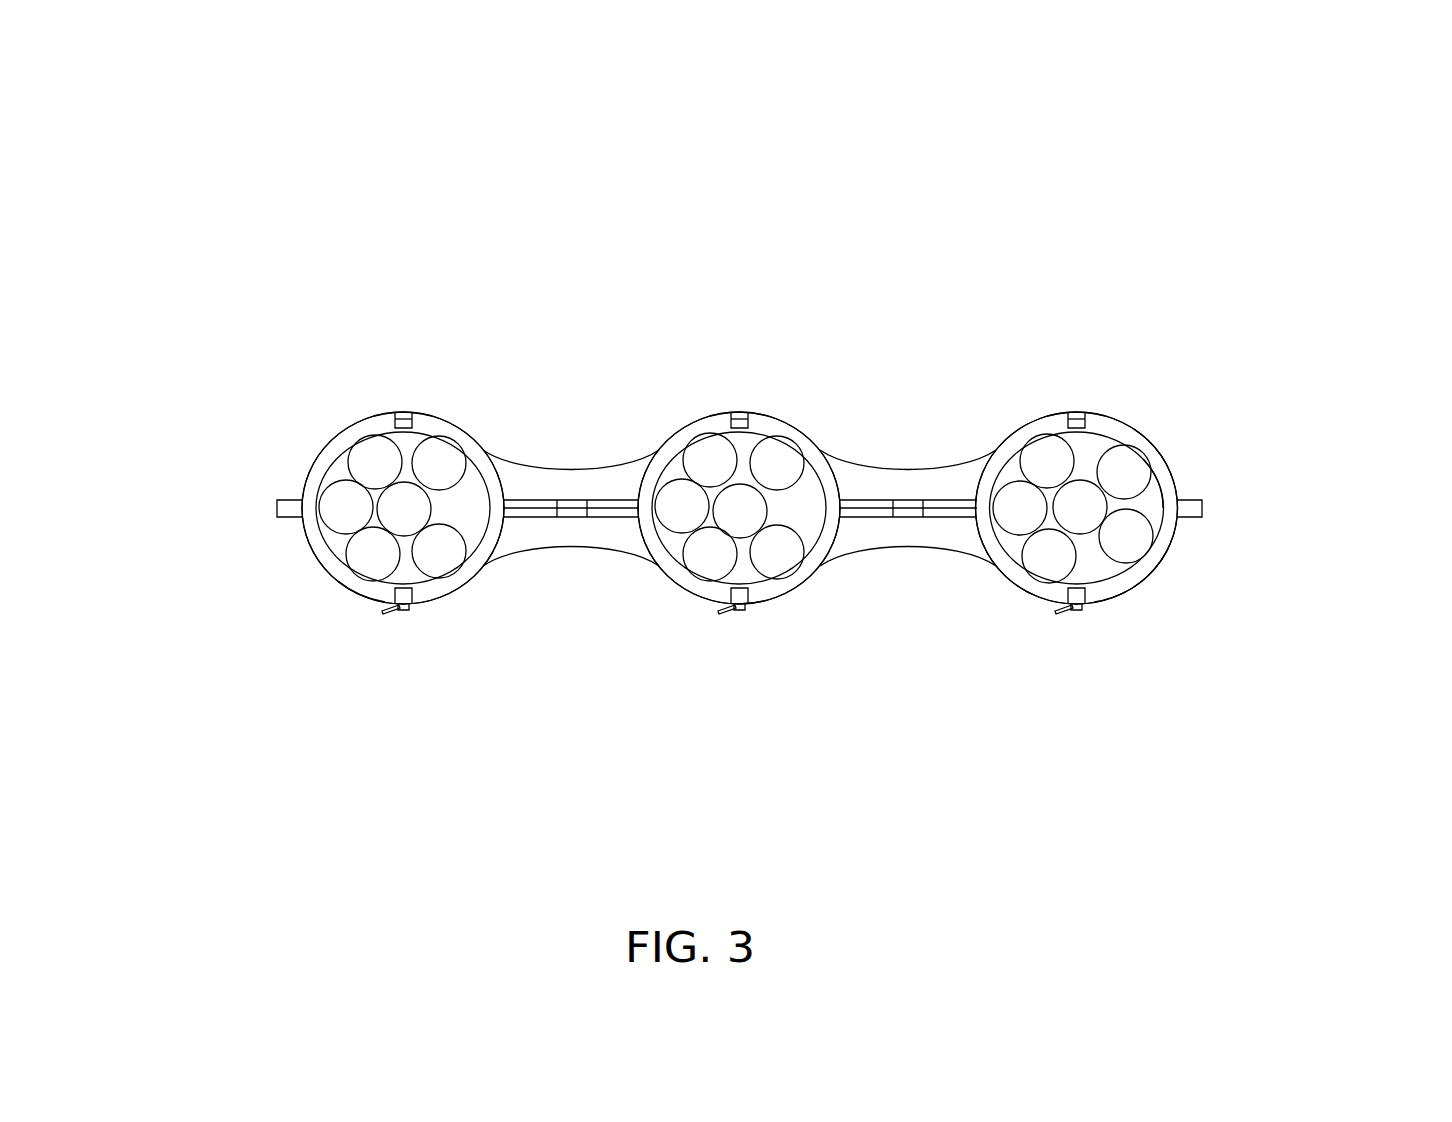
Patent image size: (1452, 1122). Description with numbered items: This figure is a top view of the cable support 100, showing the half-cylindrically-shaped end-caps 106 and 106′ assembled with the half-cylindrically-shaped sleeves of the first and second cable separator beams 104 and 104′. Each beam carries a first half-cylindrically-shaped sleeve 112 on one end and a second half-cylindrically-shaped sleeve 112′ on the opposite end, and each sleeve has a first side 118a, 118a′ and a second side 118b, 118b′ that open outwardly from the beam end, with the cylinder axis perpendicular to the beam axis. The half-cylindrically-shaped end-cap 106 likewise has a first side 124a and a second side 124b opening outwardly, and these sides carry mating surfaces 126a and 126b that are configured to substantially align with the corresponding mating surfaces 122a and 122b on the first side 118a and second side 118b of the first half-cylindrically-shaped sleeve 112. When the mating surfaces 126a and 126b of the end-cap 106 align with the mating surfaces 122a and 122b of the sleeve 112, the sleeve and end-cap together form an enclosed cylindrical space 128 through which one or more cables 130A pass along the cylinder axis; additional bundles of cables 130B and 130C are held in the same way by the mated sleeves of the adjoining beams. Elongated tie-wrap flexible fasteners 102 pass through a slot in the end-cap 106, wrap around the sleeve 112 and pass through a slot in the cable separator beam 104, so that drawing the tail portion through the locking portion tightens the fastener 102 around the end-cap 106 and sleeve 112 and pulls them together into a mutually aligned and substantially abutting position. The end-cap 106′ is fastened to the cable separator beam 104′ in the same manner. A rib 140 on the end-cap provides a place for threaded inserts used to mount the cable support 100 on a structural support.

The cable support 100 is at (806, 153).
The tie-wrap flexible fastener 102 is at (1188, 313).
The first cable separator beam 104 is at (907, 465).
The second cable separator beam 104′ is at (568, 465).
The half-cylindrically-shaped end-cap 106 is at (1119, 612).
The half-cylindrically-shaped end-cap 106′ is at (325, 566).
The first half-cylindrically-shaped sleeve 112 is at (684, 599).
The second half-cylindrically-shaped sleeve 112′ is at (346, 599).
The first side of sleeve 118a is at (707, 417).
The first side of second sleeve 118a′ is at (438, 414).
The second side of sleeve 118b is at (667, 582).
The second side of second sleeve 118b′ is at (488, 578).
The mating surface 122a is at (1070, 410).
The mating surface 122b is at (1067, 612).
The first side of end-cap 124a is at (1160, 447).
The second side of end-cap 124b is at (1162, 568).
The mating surface 126a is at (1082, 410).
The mating surface 126b is at (1087, 610).
The enclosed cylindrical space 128 is at (1152, 497).
The cables 130A is at (412, 521).
The cables 130B is at (760, 522).
The cables 130C is at (1092, 512).
The rib 140 is at (276, 498).